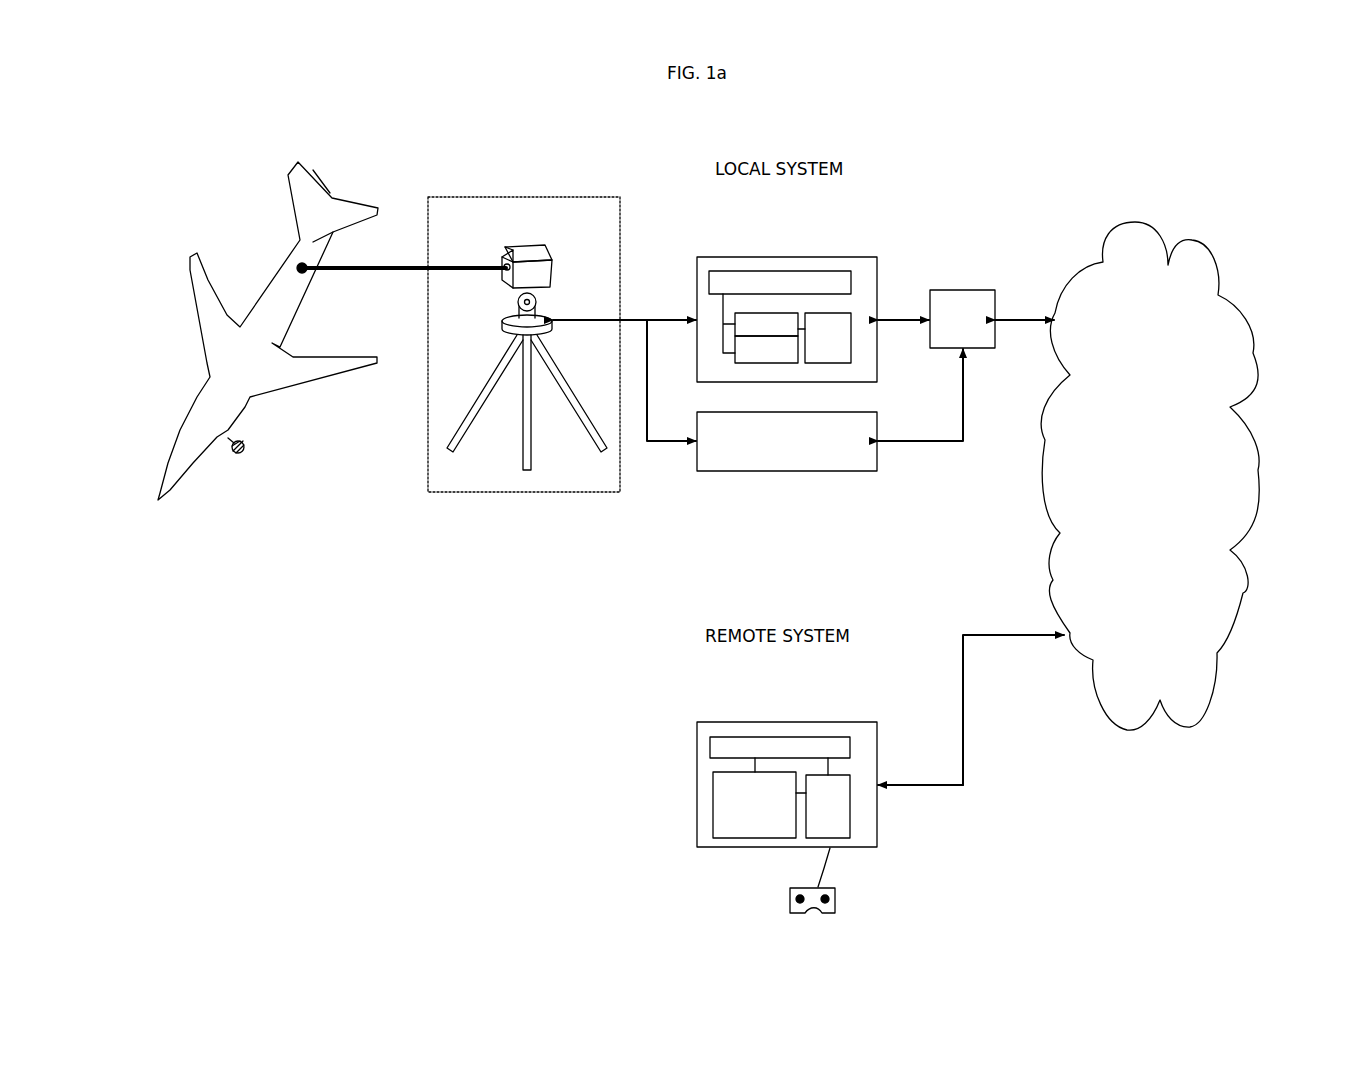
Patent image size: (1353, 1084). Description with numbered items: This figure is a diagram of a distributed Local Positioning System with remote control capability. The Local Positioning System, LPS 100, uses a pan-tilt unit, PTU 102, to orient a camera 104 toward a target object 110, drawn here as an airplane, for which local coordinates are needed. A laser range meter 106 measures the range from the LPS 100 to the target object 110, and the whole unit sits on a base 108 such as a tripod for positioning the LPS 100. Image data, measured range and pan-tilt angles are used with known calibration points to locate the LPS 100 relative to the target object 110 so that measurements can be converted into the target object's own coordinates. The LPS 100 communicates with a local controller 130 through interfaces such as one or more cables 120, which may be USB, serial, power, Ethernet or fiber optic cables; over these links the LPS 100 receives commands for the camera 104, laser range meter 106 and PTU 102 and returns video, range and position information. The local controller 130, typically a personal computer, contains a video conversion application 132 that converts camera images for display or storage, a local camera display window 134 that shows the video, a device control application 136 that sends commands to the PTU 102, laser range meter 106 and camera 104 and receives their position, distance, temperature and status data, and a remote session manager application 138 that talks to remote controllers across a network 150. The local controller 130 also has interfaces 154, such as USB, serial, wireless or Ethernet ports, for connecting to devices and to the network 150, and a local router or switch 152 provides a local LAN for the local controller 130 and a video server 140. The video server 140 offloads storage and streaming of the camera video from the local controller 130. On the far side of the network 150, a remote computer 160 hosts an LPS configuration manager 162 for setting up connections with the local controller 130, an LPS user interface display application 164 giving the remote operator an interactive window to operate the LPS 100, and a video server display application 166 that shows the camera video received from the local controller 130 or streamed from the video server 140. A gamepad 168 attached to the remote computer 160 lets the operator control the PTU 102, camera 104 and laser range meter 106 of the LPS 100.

The Local Positioning System 100 is at (516, 190).
The pan-tilt unit 102 is at (515, 296).
The camera 104 is at (545, 243).
The laser range meter 106 is at (490, 260).
The base 108 is at (510, 395).
The target object 110 is at (336, 196).
The cables 120 is at (632, 308).
The local controller 130 is at (834, 255).
The video conversion application 132 is at (760, 312).
The local camera display window 134 is at (832, 366).
The device control application 136 is at (766, 366).
The remote session manager application 138 is at (718, 267).
The video server 140 is at (788, 472).
The network 150 is at (1112, 233).
The local router or switch 152 is at (960, 289).
The interfaces 154 is at (884, 310).
The remote computer 160 is at (835, 719).
The LPS configuration manager 162 is at (718, 736).
The LPS user interface display application 164 is at (852, 817).
The video server display application 166 is at (755, 839).
The gamepad 168 is at (836, 897).